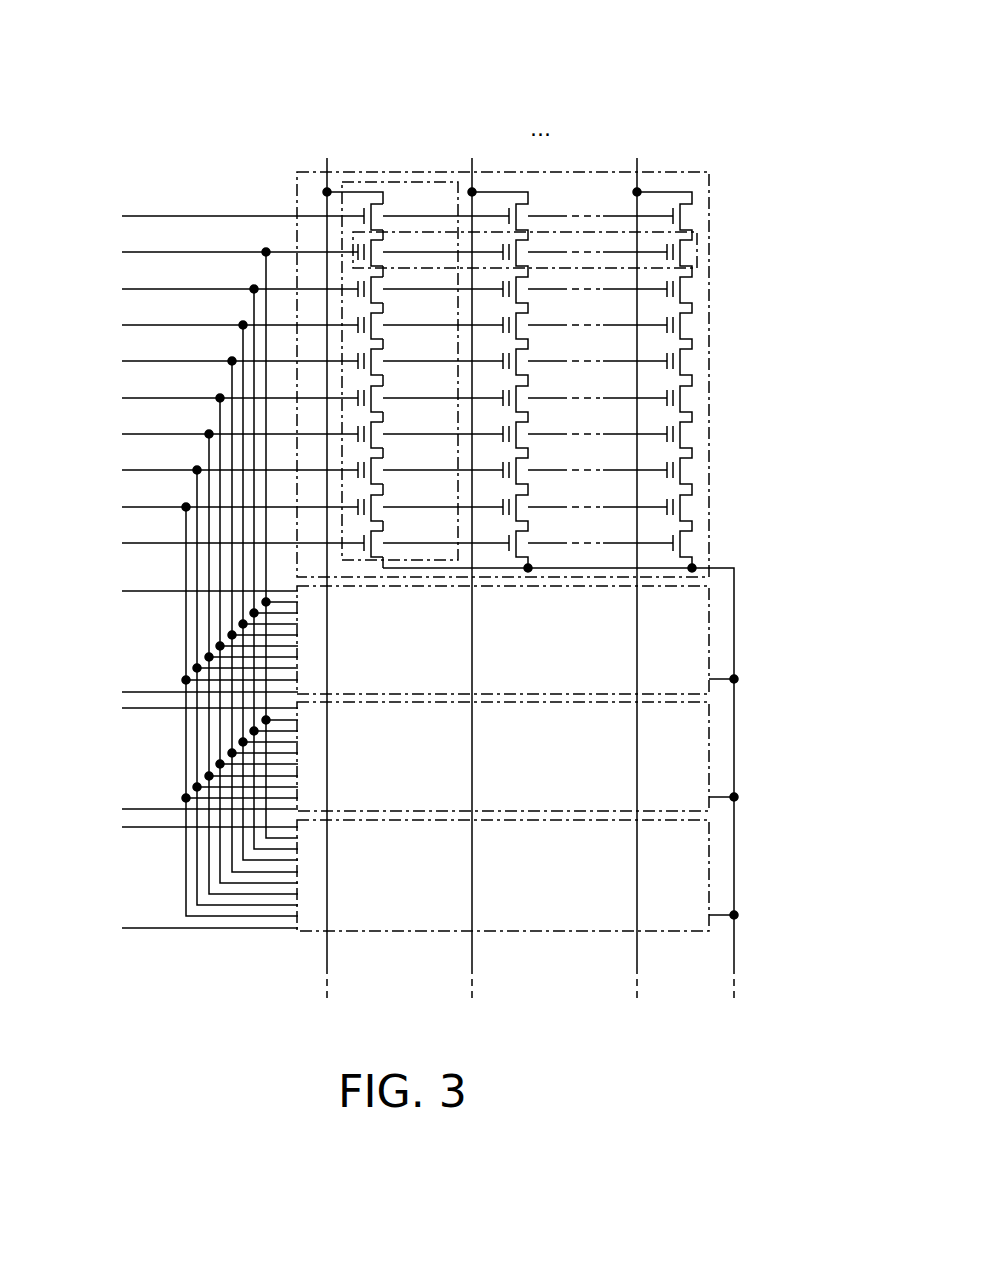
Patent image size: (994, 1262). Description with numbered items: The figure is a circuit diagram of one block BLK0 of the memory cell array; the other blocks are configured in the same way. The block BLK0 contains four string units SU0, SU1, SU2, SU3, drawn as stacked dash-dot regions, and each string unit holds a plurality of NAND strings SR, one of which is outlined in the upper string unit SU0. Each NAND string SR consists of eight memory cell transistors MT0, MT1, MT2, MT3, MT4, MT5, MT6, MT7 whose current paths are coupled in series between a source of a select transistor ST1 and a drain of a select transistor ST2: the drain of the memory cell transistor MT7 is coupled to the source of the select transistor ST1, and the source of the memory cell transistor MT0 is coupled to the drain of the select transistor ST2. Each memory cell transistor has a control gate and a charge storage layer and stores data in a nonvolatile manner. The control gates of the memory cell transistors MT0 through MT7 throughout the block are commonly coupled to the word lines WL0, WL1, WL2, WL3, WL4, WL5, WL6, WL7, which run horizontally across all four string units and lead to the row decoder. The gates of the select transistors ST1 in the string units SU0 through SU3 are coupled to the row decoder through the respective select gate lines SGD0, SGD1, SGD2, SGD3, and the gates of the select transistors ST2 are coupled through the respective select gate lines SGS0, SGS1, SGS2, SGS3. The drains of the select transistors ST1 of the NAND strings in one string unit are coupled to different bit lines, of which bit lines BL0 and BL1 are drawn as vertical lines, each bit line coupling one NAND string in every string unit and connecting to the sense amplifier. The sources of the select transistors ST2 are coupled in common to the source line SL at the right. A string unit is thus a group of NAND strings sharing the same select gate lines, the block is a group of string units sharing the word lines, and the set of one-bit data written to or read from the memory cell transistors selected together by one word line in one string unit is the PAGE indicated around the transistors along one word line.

The block BLK0 is at (518, 78).
The string unit SU0 is at (709, 364).
The string unit SU1 is at (709, 649).
The string unit SU2 is at (709, 769).
The string unit SU3 is at (709, 885).
The NAND string SR is at (387, 181).
The page PAGE is at (700, 265).
The bit line BL0 is at (324, 561).
The bit line BL1 is at (466, 561).
The source line SL is at (580, 781).
The select transistor ST1 is at (379, 214).
The select transistor ST2 is at (379, 541).
The memory cell transistor MT0 is at (379, 505).
The memory cell transistor MT1 is at (379, 468).
The memory cell transistor MT2 is at (379, 432).
The memory cell transistor MT3 is at (379, 396).
The memory cell transistor MT4 is at (379, 359).
The memory cell transistor MT5 is at (379, 323).
The memory cell transistor MT6 is at (379, 287).
The memory cell transistor MT7 is at (379, 250).
The select gate line SGD0 is at (363, 216).
The select gate line SGD1 is at (175, 591).
The select gate line SGD2 is at (175, 711).
The select gate line SGD3 is at (175, 828).
The select gate line SGS0 is at (363, 543).
The select gate line SGS1 is at (175, 690).
The select gate line SGS2 is at (175, 807).
The select gate line SGS3 is at (175, 928).
The word line WL0 is at (367, 705).
The word line WL1 is at (367, 681).
The word line WL2 is at (367, 657).
The word line WL3 is at (367, 634).
The word line WL4 is at (367, 610).
The word line WL5 is at (367, 586).
The word line WL6 is at (367, 562).
The word line WL7 is at (367, 538).